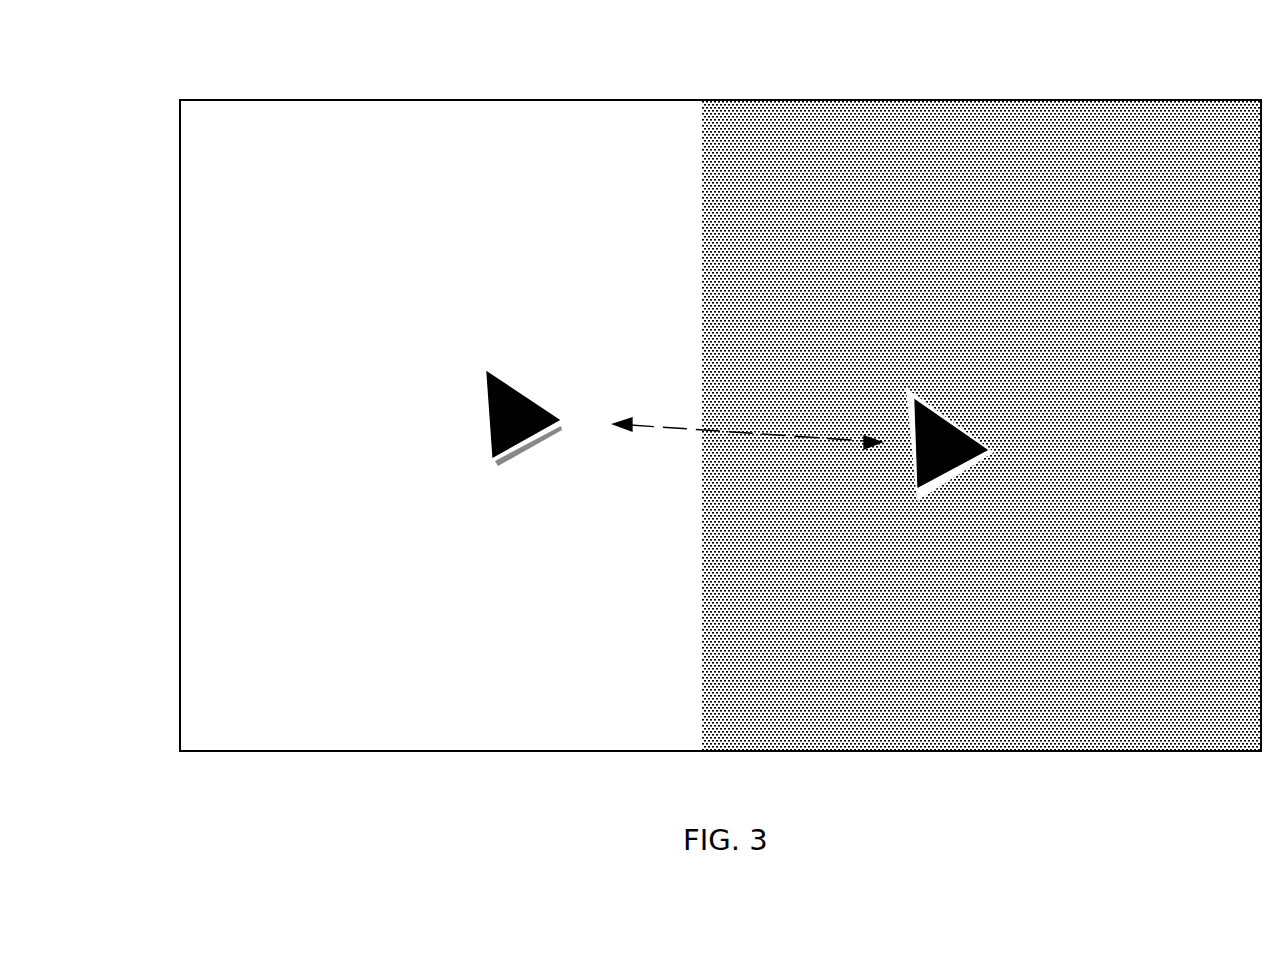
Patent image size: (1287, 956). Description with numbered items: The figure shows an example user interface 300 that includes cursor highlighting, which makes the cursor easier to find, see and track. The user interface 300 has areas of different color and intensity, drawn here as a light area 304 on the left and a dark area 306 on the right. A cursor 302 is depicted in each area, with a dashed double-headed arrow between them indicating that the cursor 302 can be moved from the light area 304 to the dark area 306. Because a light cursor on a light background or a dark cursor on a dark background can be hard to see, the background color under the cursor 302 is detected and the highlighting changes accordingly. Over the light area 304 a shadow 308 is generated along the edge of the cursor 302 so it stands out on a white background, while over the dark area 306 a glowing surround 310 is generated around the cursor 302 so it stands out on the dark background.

The user interface 300 is at (252, 99).
The cursor 302 is at (490, 400).
The light area 304 is at (440, 117).
The dark area 306 is at (981, 425).
The shadow 308 is at (533, 453).
The glowing surround 310 is at (957, 477).